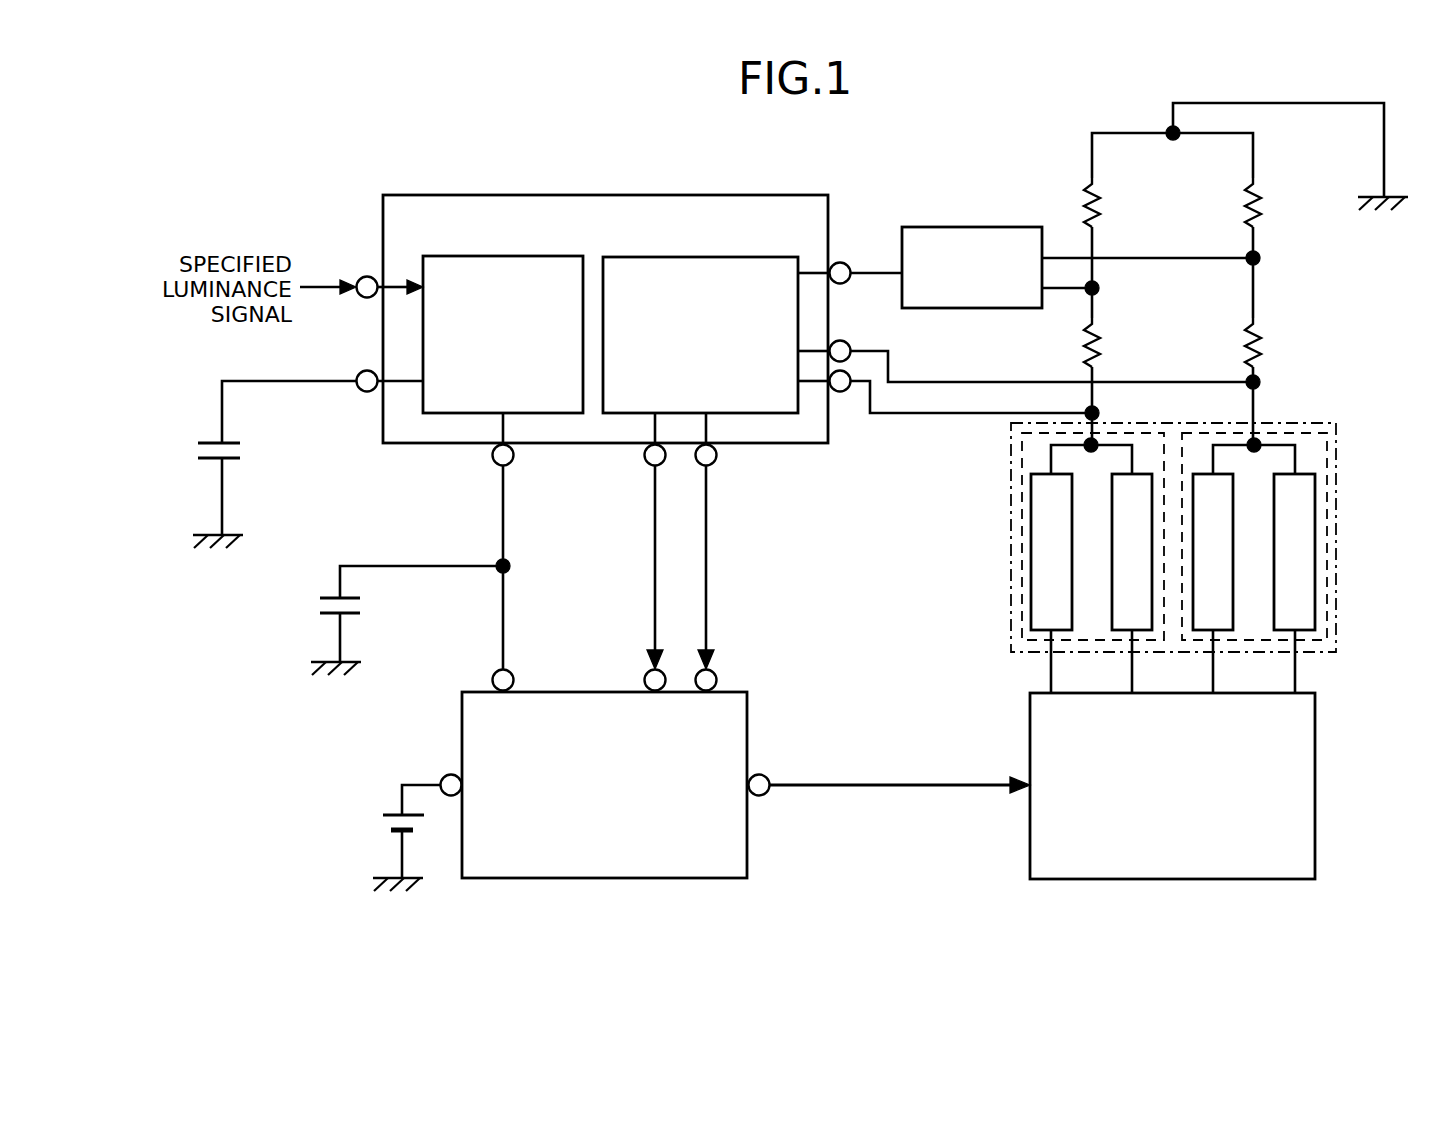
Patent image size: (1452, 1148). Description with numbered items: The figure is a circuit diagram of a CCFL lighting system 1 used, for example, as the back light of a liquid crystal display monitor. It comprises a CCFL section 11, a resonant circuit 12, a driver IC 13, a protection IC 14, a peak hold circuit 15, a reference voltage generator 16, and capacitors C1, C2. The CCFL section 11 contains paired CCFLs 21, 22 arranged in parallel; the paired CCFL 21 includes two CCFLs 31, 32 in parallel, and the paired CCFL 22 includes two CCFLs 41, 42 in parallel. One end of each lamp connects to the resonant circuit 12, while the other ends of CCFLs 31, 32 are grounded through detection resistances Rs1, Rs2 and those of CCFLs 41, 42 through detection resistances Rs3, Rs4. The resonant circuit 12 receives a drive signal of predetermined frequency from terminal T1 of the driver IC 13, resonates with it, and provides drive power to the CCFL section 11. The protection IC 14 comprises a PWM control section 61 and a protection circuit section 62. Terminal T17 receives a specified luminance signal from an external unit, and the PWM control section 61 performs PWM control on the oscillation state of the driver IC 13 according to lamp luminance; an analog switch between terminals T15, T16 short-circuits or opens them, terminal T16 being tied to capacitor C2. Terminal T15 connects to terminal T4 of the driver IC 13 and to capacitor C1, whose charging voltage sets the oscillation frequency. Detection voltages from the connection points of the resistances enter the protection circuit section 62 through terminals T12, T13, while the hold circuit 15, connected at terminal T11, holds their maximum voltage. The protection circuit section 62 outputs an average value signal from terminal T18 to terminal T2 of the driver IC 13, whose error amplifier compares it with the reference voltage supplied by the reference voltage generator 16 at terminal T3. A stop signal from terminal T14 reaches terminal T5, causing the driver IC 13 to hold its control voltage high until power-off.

The CCFL lighting system 1 is at (270, 141).
The CCFL section 11 is at (1342, 423).
The resonant circuit 12 is at (1318, 692).
The driver IC 13 is at (462, 692).
The protection IC 14 is at (420, 195).
The peak hold circuit 15 is at (995, 227).
The reference voltage generator 16 is at (383, 815).
The paired CCFL 21 is at (1022, 472).
The paired CCFL 22 is at (1328, 472).
The CCFL 31 is at (1052, 537).
The CCFL 32 is at (1133, 552).
The CCFL 41 is at (1295, 537).
The CCFL 42 is at (1213, 552).
The PWM control section 61 is at (423, 256).
The protection circuit section 62 is at (727, 257).
The capacitor C1 is at (322, 598).
The capacitor C2 is at (198, 443).
The detection resistance Rs1 is at (1118, 342).
The detection resistance Rs2 is at (1118, 202).
The detection resistance Rs3 is at (1279, 342).
The detection resistance Rs4 is at (1279, 202).
The terminal T1 is at (763, 776).
The terminal T2 is at (652, 676).
The terminal T3 is at (443, 776).
The terminal T4 is at (505, 678).
The terminal T5 is at (712, 676).
The terminal T11 is at (846, 264).
The terminal T12 is at (838, 353).
The terminal T13 is at (843, 390).
The terminal T14 is at (714, 461).
The terminal T15 is at (493, 462).
The terminal T16 is at (358, 389).
The terminal T17 is at (362, 296).
The terminal T18 is at (649, 461).